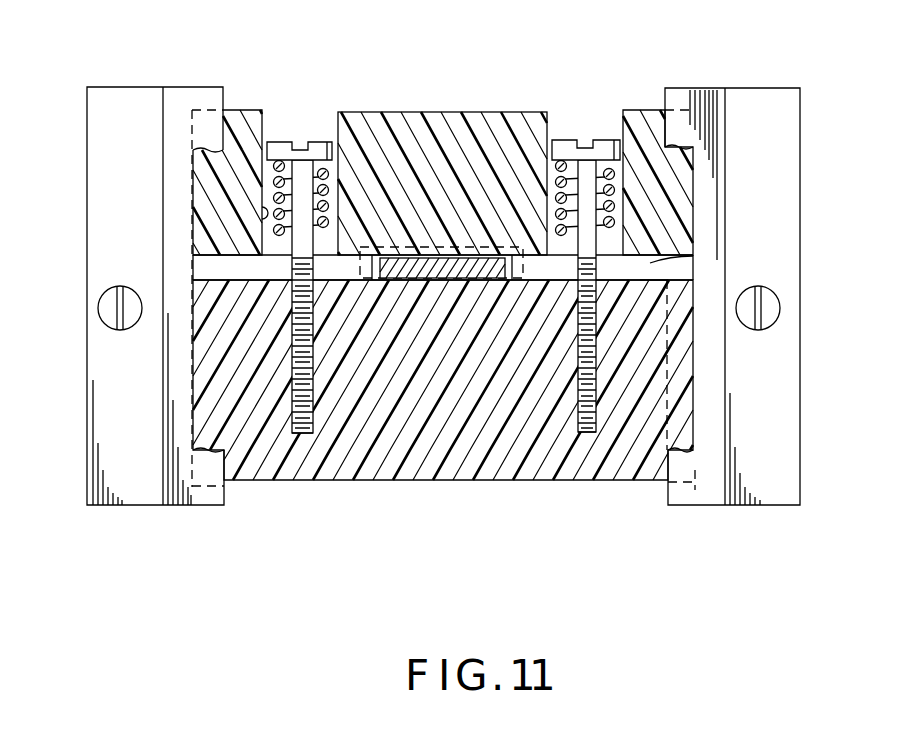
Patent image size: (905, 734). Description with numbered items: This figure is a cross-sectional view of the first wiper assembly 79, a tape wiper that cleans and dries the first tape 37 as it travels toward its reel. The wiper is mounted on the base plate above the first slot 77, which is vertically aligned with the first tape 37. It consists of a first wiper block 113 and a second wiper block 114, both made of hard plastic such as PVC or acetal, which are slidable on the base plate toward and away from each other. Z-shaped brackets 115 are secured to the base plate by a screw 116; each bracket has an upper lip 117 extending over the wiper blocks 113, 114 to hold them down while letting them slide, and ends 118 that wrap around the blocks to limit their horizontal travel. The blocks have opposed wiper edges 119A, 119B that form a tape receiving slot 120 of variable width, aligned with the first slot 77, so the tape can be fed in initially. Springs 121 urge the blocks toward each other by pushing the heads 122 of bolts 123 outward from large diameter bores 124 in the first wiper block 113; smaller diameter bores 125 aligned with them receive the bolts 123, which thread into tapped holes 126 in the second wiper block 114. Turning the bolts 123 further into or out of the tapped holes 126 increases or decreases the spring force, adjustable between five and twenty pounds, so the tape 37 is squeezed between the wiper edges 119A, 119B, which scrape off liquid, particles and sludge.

The first wiper assembly 79 is at (236, 86).
The heads of bolts 122 is at (277, 143).
The springs 121 is at (325, 143).
The first wiper block 113 is at (370, 112).
The first tape 37 is at (421, 253).
The first slot 77 is at (457, 248).
The upper lip 117 is at (682, 123).
The ends of the brackets 118 is at (693, 97).
The Z-shaped brackets 115 is at (752, 88).
The bolts 123 is at (293, 183).
The large diameter bores 124 is at (262, 210).
The wiper edge 119A is at (653, 260).
The wiper edge 119B is at (655, 282).
The screw 116 is at (108, 322).
The second wiper block 114 is at (453, 482).
The tape receiving slot 120 is at (259, 262).
The smaller diameter bores 125 is at (313, 270).
The tapped holes 126 is at (315, 380).